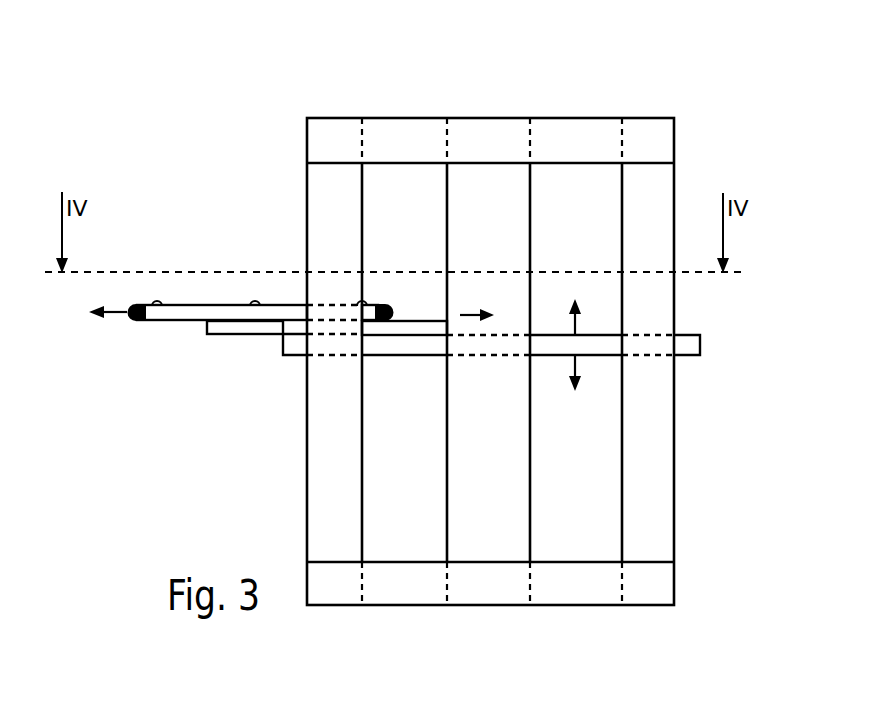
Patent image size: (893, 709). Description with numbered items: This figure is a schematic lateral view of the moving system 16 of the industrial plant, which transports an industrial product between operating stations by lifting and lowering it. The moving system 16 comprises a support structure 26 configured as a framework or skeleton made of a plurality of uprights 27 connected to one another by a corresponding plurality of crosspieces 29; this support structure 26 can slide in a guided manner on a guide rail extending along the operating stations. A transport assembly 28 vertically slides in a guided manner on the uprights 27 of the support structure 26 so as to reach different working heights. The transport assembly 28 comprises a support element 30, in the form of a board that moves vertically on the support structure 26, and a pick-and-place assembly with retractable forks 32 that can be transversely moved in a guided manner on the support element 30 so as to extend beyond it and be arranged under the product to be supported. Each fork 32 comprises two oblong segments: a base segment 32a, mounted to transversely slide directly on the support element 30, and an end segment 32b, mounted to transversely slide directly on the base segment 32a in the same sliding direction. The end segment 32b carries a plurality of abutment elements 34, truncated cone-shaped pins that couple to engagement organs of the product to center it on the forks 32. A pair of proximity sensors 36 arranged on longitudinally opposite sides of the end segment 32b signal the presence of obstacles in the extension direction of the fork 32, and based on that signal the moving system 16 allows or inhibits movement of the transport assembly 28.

The moving system 16 is at (488, 74).
The support structure 26 is at (362, 109).
The uprights 27 is at (348, 446).
The transport assembly 28 is at (273, 333).
The crosspieces 29 is at (503, 159).
The support element 30 is at (688, 345).
The retractable fork 32 is at (227, 341).
The base segment 32a is at (417, 328).
The end segment 32b is at (205, 308).
The abutment element 34 is at (155, 303).
The proximity sensor 36 is at (130, 304).